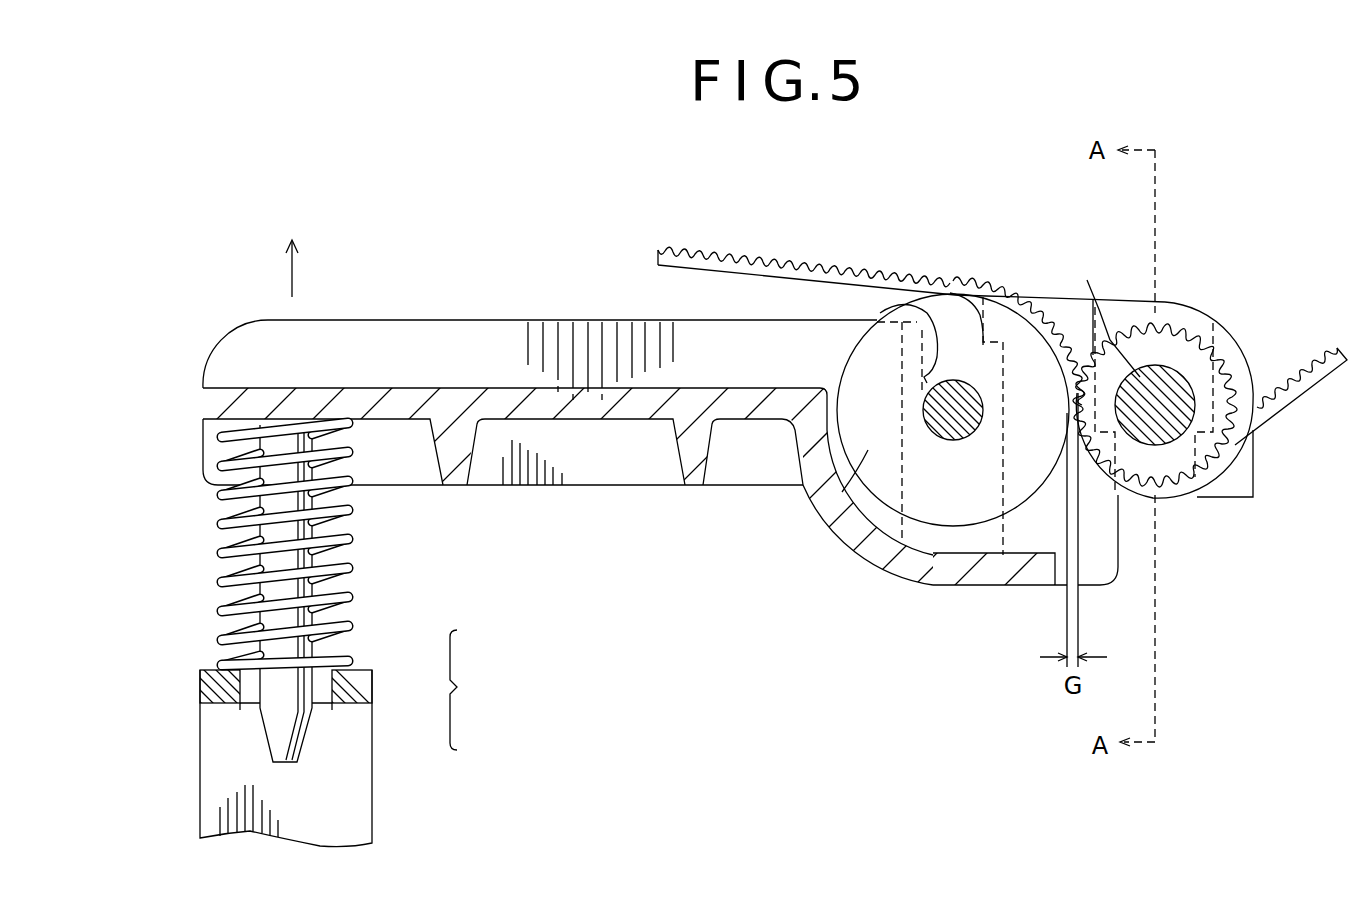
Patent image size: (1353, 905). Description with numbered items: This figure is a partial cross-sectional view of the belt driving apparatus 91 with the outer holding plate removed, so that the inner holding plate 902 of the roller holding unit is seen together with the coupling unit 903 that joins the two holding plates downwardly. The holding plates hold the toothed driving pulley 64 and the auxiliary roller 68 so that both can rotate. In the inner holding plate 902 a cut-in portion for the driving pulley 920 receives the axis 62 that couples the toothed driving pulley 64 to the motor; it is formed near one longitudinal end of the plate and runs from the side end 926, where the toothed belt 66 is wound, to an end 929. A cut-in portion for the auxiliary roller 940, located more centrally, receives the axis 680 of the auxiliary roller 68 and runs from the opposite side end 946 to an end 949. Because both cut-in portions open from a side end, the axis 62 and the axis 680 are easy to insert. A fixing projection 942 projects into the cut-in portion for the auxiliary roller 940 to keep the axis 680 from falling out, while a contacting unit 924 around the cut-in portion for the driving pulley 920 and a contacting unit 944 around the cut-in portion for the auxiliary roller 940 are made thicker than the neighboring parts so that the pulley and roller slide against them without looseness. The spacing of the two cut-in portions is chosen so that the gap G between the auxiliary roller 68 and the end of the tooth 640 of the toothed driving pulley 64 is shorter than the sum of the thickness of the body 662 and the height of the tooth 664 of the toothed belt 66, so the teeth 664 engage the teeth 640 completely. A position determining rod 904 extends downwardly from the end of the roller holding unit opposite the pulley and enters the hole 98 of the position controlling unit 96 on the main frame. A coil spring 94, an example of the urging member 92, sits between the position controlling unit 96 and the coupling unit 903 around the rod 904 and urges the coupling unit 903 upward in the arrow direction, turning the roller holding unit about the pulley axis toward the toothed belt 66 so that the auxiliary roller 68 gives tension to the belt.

The belt driving mechanism 91 is at (1046, 96).
The inner holding plate 902 is at (460, 345).
The coupling unit 903 is at (384, 405).
The position determining rod 904 is at (285, 720).
The urging member 92 is at (471, 690).
The coil spring 94 is at (350, 627).
The position controlling unit 96 is at (352, 690).
The hole 98 is at (318, 693).
The toothed belt 66 is at (1002, 311).
The body 662 is at (862, 282).
The tooth 664 is at (778, 258).
The auxiliary roller 68 is at (812, 508).
The cut-in portion for the auxiliary roller 940 is at (942, 293).
The fixing projection 942 is at (950, 293).
The side end 946 is at (968, 280).
The contacting unit 944 is at (970, 540).
The end 949 is at (940, 440).
The axis 680 is at (945, 437).
The axis 62 is at (1087, 280).
The contacting unit 924 is at (1119, 320).
The toothed driving pulley 64 is at (1150, 343).
The tooth 640 is at (1173, 327).
The end 929 is at (1135, 385).
The cut-in portion for the driving pulley 920 is at (1185, 503).
The side end 926 is at (1240, 500).